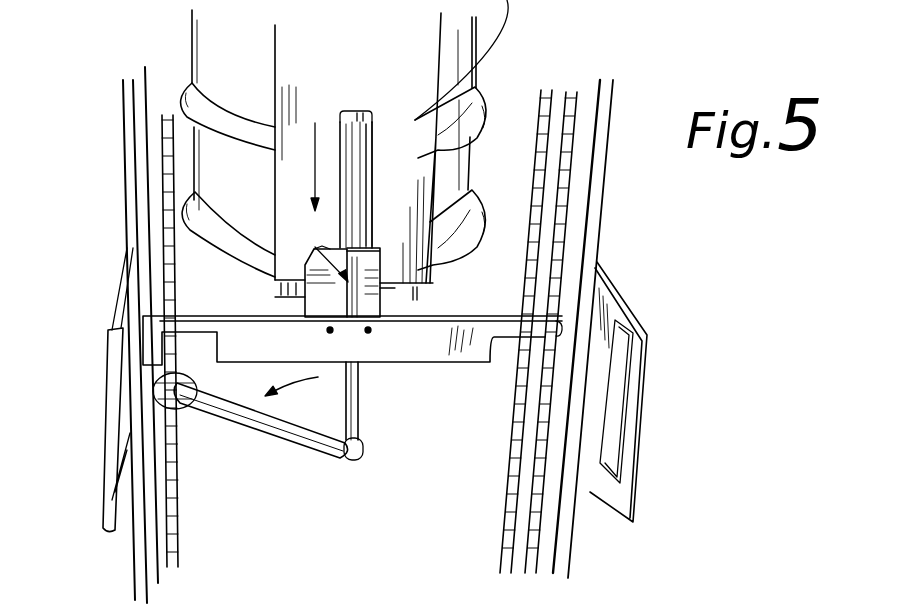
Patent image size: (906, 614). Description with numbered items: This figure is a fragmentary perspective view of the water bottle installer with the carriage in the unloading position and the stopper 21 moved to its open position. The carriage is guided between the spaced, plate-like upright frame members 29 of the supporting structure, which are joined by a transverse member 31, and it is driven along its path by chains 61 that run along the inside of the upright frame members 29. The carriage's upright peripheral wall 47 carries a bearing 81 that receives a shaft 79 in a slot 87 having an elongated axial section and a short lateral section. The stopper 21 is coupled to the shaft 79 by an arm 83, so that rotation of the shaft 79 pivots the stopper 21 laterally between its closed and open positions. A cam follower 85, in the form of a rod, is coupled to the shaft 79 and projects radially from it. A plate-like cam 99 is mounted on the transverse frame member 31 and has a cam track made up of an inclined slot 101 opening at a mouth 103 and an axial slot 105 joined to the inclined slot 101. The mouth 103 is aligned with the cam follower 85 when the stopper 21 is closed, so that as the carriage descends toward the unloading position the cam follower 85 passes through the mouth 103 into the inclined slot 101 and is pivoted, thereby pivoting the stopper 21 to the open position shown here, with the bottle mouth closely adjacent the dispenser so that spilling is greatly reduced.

The stopper 21 is at (160, 375).
The upright frame members 29 is at (127, 148).
The transverse members 31 is at (473, 363).
The peripheral wall 47 is at (452, 72).
The chains 61 is at (180, 520).
The shaft 79 is at (360, 430).
The bearing 81 is at (340, 112).
The arm 83 is at (250, 425).
The cam follower 85 is at (365, 293).
The slot 87 is at (368, 110).
The cam 99 is at (328, 298).
The inclined slot 101 is at (300, 275).
The mouth 103 is at (315, 247).
The axial slot 105 is at (372, 325).